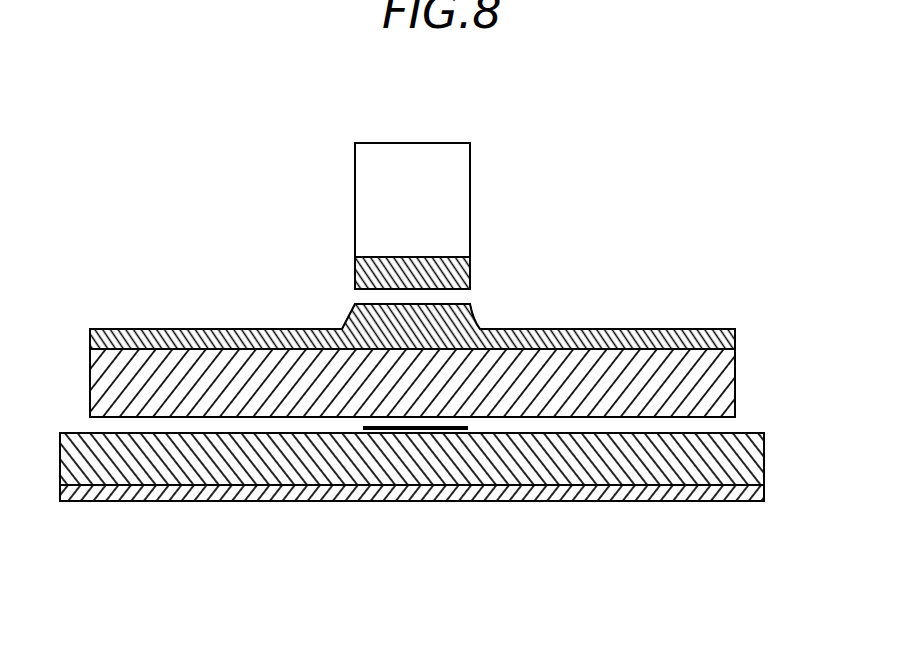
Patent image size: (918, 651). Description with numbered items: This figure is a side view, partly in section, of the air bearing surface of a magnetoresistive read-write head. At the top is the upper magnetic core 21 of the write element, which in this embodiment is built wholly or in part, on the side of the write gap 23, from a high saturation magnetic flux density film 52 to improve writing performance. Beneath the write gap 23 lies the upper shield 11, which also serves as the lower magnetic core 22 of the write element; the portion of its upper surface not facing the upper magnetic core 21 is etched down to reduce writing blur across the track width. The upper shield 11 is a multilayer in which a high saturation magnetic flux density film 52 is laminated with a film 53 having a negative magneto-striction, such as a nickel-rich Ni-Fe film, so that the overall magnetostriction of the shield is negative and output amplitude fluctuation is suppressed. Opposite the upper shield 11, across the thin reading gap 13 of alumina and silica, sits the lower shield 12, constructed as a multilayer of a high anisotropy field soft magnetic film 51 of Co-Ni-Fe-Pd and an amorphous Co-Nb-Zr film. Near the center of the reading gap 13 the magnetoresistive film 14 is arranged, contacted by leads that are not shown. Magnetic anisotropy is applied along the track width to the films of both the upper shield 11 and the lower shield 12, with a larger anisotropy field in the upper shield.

The upper shield 11 is at (617, 310).
The lower magnetic core 22 is at (412, 331).
The upper magnetic core 21 is at (488, 182).
The write gap 23 is at (432, 296).
The lower shield 12 is at (622, 520).
The reading gap 13 is at (498, 427).
The magnetoresistive film 14 is at (407, 430).
The high anisotropy field soft magnetic film 51 is at (215, 498).
The high saturation magnetic flux density film 52 is at (356, 293).
The film having a negative magneto-striction 53 is at (220, 375).